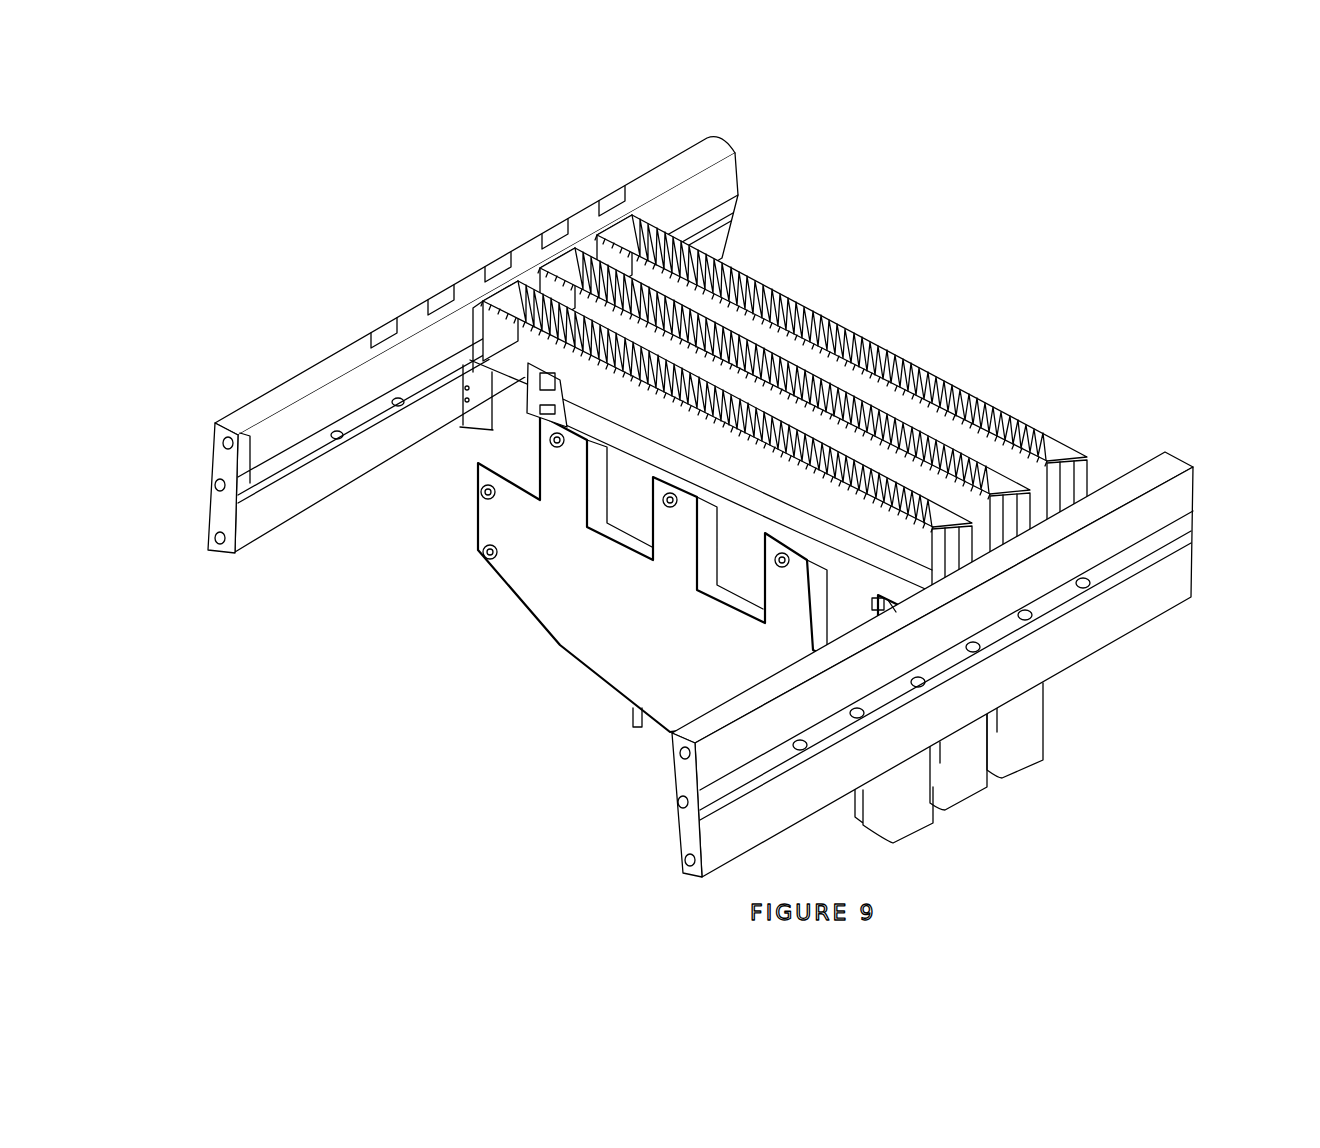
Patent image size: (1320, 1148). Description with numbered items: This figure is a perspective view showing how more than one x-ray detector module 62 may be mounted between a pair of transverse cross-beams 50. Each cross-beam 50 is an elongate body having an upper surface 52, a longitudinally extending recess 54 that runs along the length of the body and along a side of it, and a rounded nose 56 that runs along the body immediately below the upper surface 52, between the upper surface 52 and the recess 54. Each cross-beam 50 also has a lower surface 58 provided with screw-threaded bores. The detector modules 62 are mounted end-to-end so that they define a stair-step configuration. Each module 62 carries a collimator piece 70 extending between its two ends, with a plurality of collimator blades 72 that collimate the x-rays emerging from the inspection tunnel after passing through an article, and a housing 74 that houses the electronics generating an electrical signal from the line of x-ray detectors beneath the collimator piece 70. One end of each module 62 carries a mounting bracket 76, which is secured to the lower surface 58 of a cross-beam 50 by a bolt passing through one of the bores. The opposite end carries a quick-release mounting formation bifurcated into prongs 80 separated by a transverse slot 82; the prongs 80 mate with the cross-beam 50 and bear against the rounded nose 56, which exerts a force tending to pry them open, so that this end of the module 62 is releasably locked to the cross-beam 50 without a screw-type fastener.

The cross-beam 50 is at (732, 318).
The upper surface 52 is at (295, 378).
The longitudinally extending recess 54 is at (474, 601).
The rounded nose 56 is at (212, 422).
The lower surface 58 is at (231, 559).
The x-ray detector module 62 is at (778, 529).
The collimator piece 70 is at (918, 365).
The collimator blades 72 is at (1010, 412).
The housing 74 is at (678, 547).
The mounting bracket 76 is at (477, 413).
The prongs 80 is at (882, 600).
The transverse slot 82 is at (1033, 652).